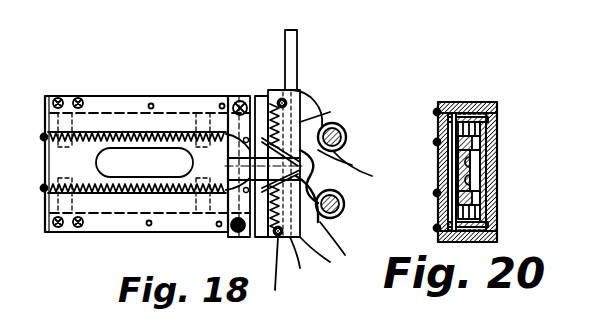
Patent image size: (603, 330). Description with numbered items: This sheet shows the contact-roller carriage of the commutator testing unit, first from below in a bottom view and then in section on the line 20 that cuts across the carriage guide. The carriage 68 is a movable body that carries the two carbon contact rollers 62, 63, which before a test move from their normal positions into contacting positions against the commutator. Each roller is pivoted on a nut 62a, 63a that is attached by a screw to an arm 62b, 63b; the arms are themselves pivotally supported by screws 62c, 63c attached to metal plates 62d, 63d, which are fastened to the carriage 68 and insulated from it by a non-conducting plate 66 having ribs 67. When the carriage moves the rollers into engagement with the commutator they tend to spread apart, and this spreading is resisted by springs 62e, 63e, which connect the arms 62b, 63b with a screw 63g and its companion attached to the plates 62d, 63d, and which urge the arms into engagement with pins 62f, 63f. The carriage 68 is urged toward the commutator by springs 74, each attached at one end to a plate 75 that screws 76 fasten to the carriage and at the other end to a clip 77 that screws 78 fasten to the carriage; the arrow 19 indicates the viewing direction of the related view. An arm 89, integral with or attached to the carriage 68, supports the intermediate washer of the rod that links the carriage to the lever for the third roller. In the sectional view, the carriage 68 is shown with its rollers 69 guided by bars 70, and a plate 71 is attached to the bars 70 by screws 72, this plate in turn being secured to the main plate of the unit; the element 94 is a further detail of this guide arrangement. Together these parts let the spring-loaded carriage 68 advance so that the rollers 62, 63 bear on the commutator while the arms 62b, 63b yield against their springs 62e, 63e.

In FIG. 18, the bars 70 is at (118, 233).
In FIG. 20, the bars 70 is at (460, 244).
In FIG. 18, the screws 76 is at (42, 137).
In FIG. 18, the plate 75 is at (44, 186).
In FIG. 18, the direction arrow 19 is at (24, 190).
In FIG. 18, the springs 74 is at (150, 176).
In FIG. 18, the guide key 94 is at (118, 158).
In FIG. 18, the screws 78 is at (251, 99).
In FIG. 20, the screws 78 is at (440, 104).
In FIG. 18, the section line 20— 20 is at (241, 95).
In FIG. 18, the screw 63g is at (286, 99).
In FIG. 18, the arm 89 is at (298, 48).
In FIG. 18, the carbon contact roller 63 is at (345, 163).
In FIG. 18, the metal plate 63d is at (302, 124).
In FIG. 20, the metal plate 63d is at (446, 126).
In FIG. 18, the spring 63e is at (278, 140).
In FIG. 18, the pin 63f is at (345, 131).
In FIG. 18, the nut 63a is at (343, 143).
In FIG. 18, the screw 63c is at (362, 176).
In FIG. 18, the arm 63b is at (312, 172).
In FIG. 18, the carbon contact roller 62 is at (344, 205).
In FIG. 18, the nut 62a is at (341, 212).
In FIG. 18, the arm 62b is at (319, 225).
In FIG. 18, the screw 62c is at (326, 242).
In FIG. 18, the pin 62f is at (322, 258).
In FIG. 18, the spring 62e is at (302, 272).
In FIG. 18, the metal plate 62d is at (276, 292).
In FIG. 20, the screws 72 is at (498, 108).
In FIG. 20, the plate 71 is at (498, 170).
In FIG. 20, the rollers 69 is at (481, 128).
In FIG. 20, the non-conducting plate 66 is at (481, 148).
In FIG. 20, the carriage 68 is at (481, 196).
In FIG. 20, the clip 77 is at (447, 168).
In FIG. 20, the ribs 67 is at (440, 182).